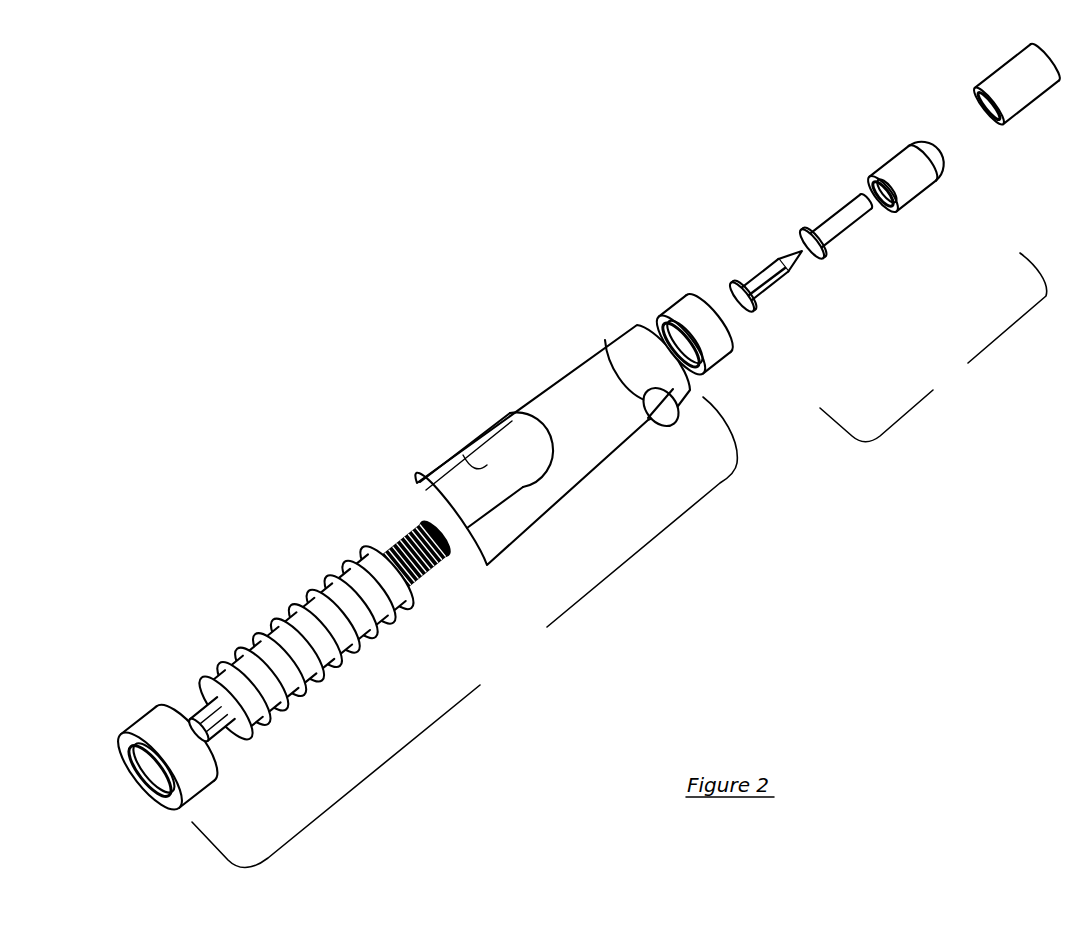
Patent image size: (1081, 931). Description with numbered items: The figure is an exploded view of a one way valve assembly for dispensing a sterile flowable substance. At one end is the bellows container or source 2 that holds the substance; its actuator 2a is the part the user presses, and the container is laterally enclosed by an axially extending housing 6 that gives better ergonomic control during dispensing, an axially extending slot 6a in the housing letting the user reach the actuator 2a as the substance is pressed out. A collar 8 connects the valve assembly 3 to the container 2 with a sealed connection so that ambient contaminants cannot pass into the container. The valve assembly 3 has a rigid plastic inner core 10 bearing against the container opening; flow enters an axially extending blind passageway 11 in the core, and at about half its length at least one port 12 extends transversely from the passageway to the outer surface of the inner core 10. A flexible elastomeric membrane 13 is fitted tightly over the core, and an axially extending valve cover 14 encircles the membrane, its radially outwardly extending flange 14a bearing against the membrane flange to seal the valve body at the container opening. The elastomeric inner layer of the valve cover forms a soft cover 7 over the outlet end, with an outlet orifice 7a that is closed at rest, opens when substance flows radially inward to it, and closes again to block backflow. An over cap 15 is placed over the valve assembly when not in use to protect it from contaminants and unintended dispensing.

The bellows container 2 is at (365, 543).
The actuator 2a is at (143, 710).
The valve assembly 3 is at (933, 347).
The housing 6 is at (533, 445).
The slot in housing 6a is at (467, 463).
The soft cover 7 is at (931, 133).
The outlet orifice 7a is at (953, 145).
The collar 8 is at (677, 300).
The inner core 10 is at (791, 295).
The blind passageway 11 is at (743, 307).
The port 12 is at (770, 287).
The flexible membrane 13 is at (843, 210).
The valve cover 14 is at (907, 157).
The flange 14a is at (903, 207).
The over cap 15 is at (1020, 55).